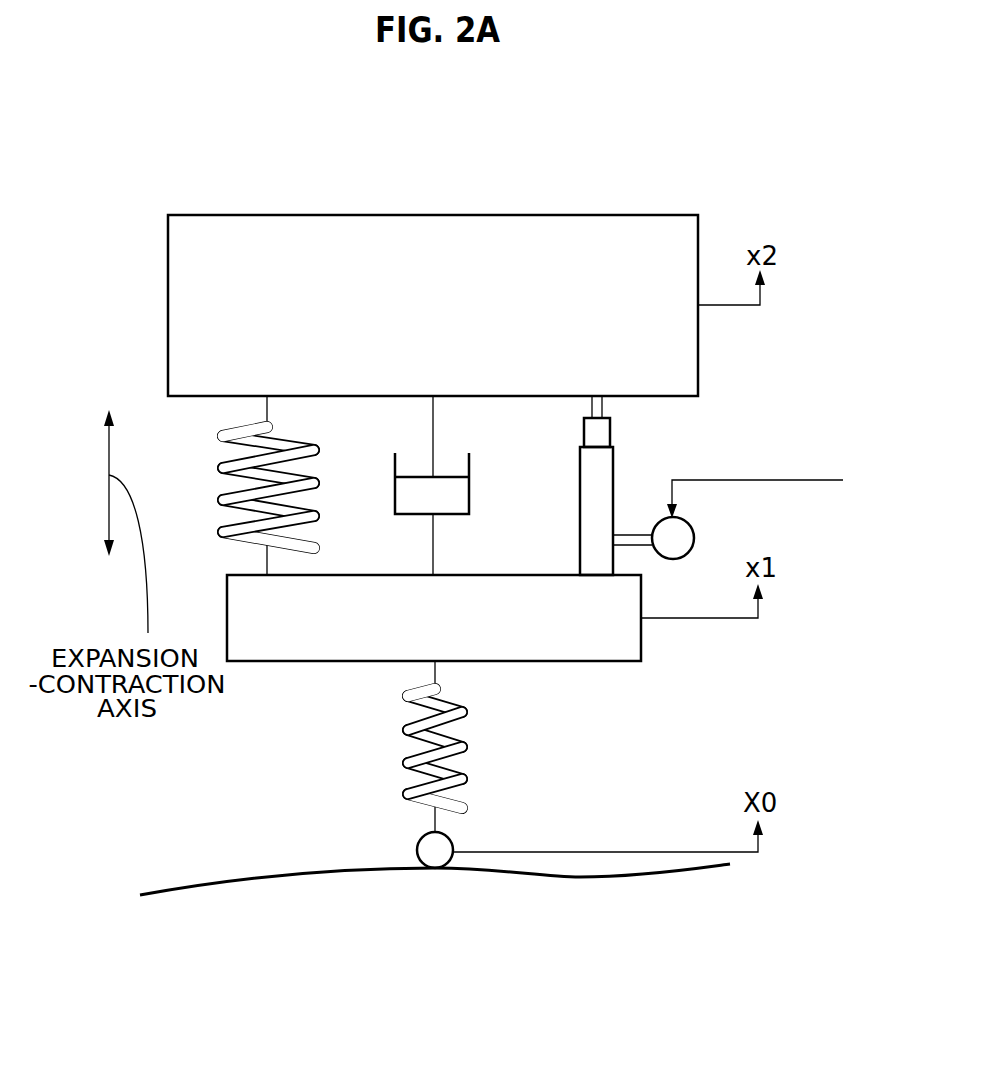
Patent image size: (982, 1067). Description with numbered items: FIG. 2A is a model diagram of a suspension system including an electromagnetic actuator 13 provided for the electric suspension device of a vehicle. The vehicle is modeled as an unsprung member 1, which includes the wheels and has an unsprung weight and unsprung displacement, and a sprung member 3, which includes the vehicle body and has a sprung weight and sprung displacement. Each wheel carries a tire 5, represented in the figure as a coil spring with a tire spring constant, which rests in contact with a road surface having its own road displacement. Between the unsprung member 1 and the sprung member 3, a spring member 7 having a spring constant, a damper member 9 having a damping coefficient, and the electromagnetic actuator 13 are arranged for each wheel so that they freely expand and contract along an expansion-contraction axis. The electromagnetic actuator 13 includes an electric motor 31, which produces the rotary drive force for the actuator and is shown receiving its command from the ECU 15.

The unsprung member 1 is at (587, 661).
The sprung member 3 is at (612, 215).
The tire 5 is at (458, 747).
The spring member 7 is at (318, 485).
The damper member 9 is at (470, 490).
The electromagnetic actuator 13 is at (604, 483).
The ECU 15 is at (757, 484).
The electric motor 31 is at (694, 541).